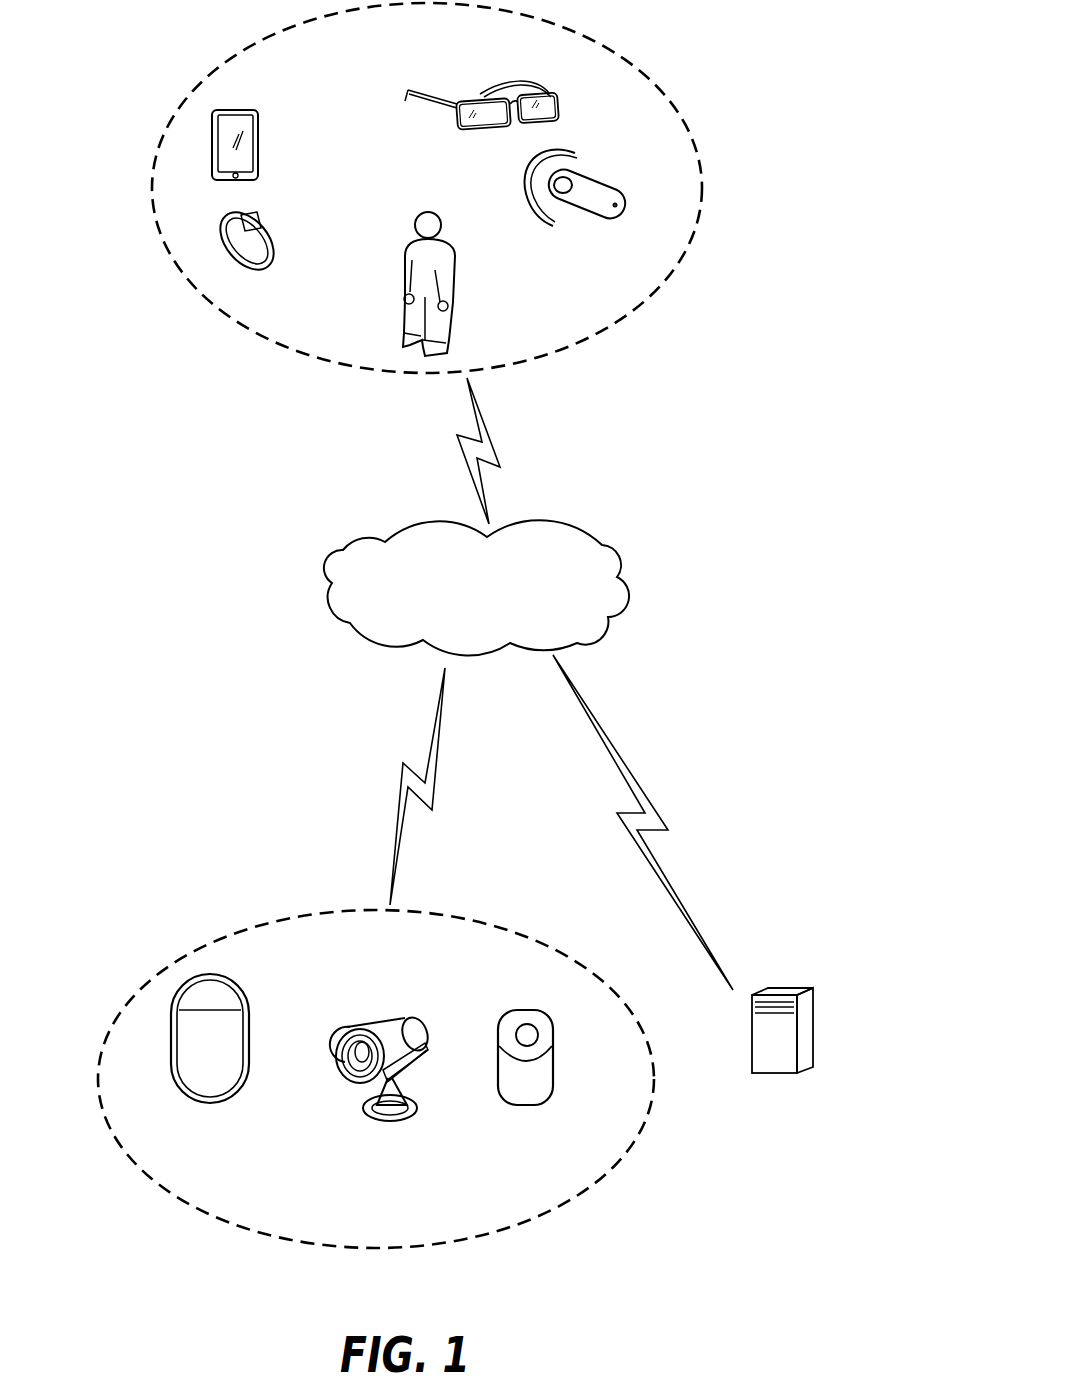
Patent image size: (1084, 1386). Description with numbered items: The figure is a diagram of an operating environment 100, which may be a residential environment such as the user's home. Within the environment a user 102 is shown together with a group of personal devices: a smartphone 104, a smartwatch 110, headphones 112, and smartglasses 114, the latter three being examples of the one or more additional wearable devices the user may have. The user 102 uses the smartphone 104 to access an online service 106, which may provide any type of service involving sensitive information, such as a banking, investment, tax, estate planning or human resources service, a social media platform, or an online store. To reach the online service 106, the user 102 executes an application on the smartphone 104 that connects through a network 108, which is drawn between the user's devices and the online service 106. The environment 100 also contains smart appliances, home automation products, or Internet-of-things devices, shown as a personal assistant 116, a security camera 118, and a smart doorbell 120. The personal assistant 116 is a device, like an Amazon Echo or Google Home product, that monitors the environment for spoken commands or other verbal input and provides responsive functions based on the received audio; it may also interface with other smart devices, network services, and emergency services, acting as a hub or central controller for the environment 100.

The operating environment 100 is at (790, 93).
The user 102 is at (455, 258).
The smartphone 104 is at (259, 136).
The online service 106 is at (813, 1010).
The network 108 is at (602, 545).
The smartwatch 110 is at (272, 234).
The headphones 112 is at (578, 152).
The smartglasses 114 is at (545, 86).
The personal assistant 116 is at (214, 1103).
The security camera 118 is at (402, 1121).
The smart doorbell 120 is at (528, 1105).